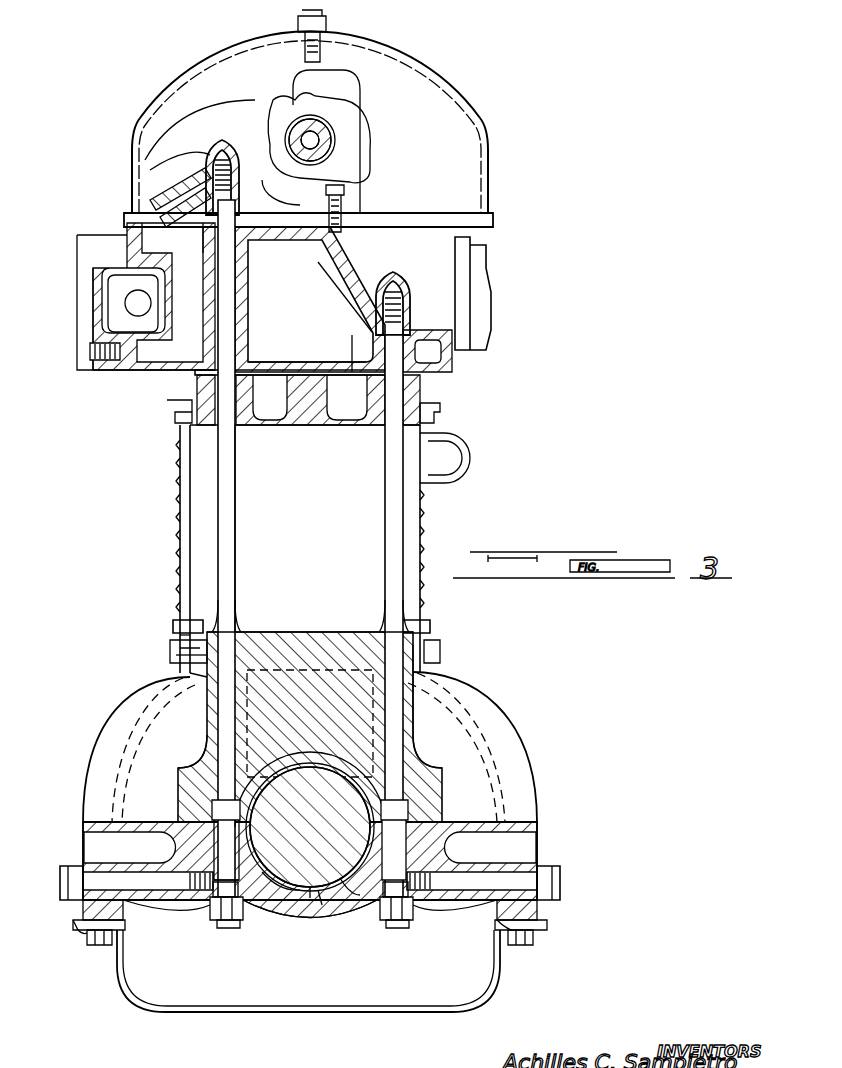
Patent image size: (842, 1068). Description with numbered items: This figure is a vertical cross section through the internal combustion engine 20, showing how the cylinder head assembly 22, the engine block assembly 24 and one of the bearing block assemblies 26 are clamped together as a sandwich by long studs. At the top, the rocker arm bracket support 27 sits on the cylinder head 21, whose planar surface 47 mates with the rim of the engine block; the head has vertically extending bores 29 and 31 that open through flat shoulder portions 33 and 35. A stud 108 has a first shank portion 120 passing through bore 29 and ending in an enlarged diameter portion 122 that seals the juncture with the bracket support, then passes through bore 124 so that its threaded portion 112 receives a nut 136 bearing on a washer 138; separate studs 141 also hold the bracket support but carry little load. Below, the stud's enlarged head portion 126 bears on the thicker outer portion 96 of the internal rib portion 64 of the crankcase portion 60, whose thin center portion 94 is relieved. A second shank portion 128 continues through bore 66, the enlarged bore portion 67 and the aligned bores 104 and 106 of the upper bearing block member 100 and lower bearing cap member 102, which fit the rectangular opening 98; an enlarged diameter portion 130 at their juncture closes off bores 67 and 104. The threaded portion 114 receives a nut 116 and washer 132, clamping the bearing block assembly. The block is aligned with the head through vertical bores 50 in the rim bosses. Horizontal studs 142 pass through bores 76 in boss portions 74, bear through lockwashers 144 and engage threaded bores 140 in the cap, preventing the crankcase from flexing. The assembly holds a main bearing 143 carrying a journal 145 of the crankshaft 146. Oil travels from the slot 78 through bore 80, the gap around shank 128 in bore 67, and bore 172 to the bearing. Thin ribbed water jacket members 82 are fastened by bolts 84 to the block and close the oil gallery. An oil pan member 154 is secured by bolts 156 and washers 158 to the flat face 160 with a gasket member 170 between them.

The internal combustion engine 20 is at (549, 206).
The cylinder head 21 is at (246, 325).
The cylinder head assembly 22 is at (480, 281).
The engine block assembly 24 is at (446, 396).
The bearing block assembly 26 is at (300, 896).
The rocker arm bracket support 27 is at (357, 213).
The bore 29 is at (242, 306).
The bore 31 is at (404, 354).
The shoulder portion 33 is at (262, 195).
The shoulder portion 35 is at (357, 322).
The planar surface 47 is at (430, 378).
The vertical bore 50 is at (203, 386).
The crankcase portion 60 is at (490, 694).
The rib portion 64 is at (302, 635).
The bore 66 is at (242, 632).
The enlarged diameter bore portion 67 is at (246, 720).
The boss portion 74 is at (96, 843).
The bore 76 is at (81, 905).
The slot 78 is at (183, 641).
The bore 80 is at (176, 659).
The water jacket member 82 is at (180, 494).
The bolt 84 is at (170, 411).
The thin center portion 94 is at (320, 632).
The thicker outer portion 96 is at (256, 700).
The rectangular opening 98 is at (226, 818).
The upper bearing block member 100 is at (231, 826).
The lower bearing cap member 102 is at (292, 901).
The bore 104 is at (233, 775).
The bore 106 is at (176, 853).
The stud 108 is at (249, 499).
The threaded portion 112 is at (226, 148).
The threaded portion 114 is at (225, 930).
The nut 116 is at (229, 932).
The first shank portion 120 is at (238, 468).
The enlarged diameter portion 122 is at (250, 262).
The bore 124 is at (250, 238).
The enlarged head portion 126 is at (240, 624).
The second shank portion 128 is at (223, 687).
The enlarged diameter portion 130 is at (227, 840).
The washer 132 is at (216, 911).
The nut 136 is at (238, 143).
The washer 138 is at (168, 143).
The threaded bore 140 is at (202, 906).
The stud 141 is at (348, 190).
The stud 142 is at (62, 882).
The main bearing 143 is at (322, 914).
The lockwasher 144 is at (80, 866).
The journal 145 is at (270, 935).
The crankshaft 146 is at (340, 913).
The oil pan member 154 is at (252, 1013).
The bolt 156 is at (100, 946).
The washer 158 is at (85, 935).
The flat face 160 is at (528, 925).
The gasket member 170 is at (535, 912).
The bore 172 is at (276, 807).